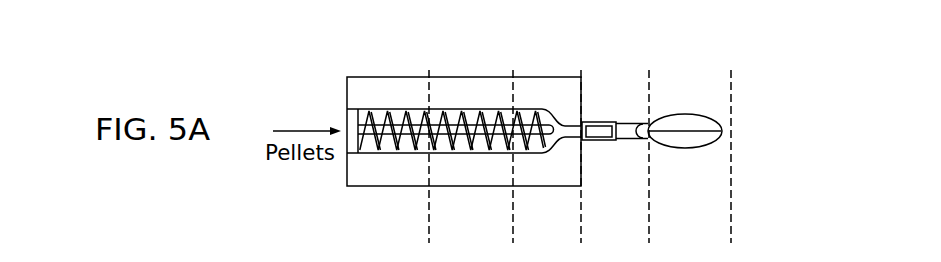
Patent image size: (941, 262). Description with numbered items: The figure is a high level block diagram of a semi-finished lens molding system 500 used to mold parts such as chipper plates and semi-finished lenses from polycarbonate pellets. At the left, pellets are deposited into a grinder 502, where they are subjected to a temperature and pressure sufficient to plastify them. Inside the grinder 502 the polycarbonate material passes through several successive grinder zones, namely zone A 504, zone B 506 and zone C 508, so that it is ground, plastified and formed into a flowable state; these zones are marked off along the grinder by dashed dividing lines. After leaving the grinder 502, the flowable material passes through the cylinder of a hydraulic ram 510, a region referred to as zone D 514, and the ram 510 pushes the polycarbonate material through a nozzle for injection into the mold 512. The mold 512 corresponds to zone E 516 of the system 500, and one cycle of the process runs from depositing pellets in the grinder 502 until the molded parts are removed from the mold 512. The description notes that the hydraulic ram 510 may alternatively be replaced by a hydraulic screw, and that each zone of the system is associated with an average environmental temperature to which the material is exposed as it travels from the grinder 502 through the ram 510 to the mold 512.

The semi-finished lens molding system 500 is at (868, 134).
The grinder 502 is at (482, 76).
The grinder zone A 504 is at (405, 246).
The grinder zone B 506 is at (493, 246).
The grinder zone C 508 is at (566, 246).
The hydraulic ram 510 is at (616, 122).
The mold 512 is at (687, 114).
The zone D 514 is at (635, 246).
The zone E 516 is at (708, 246).